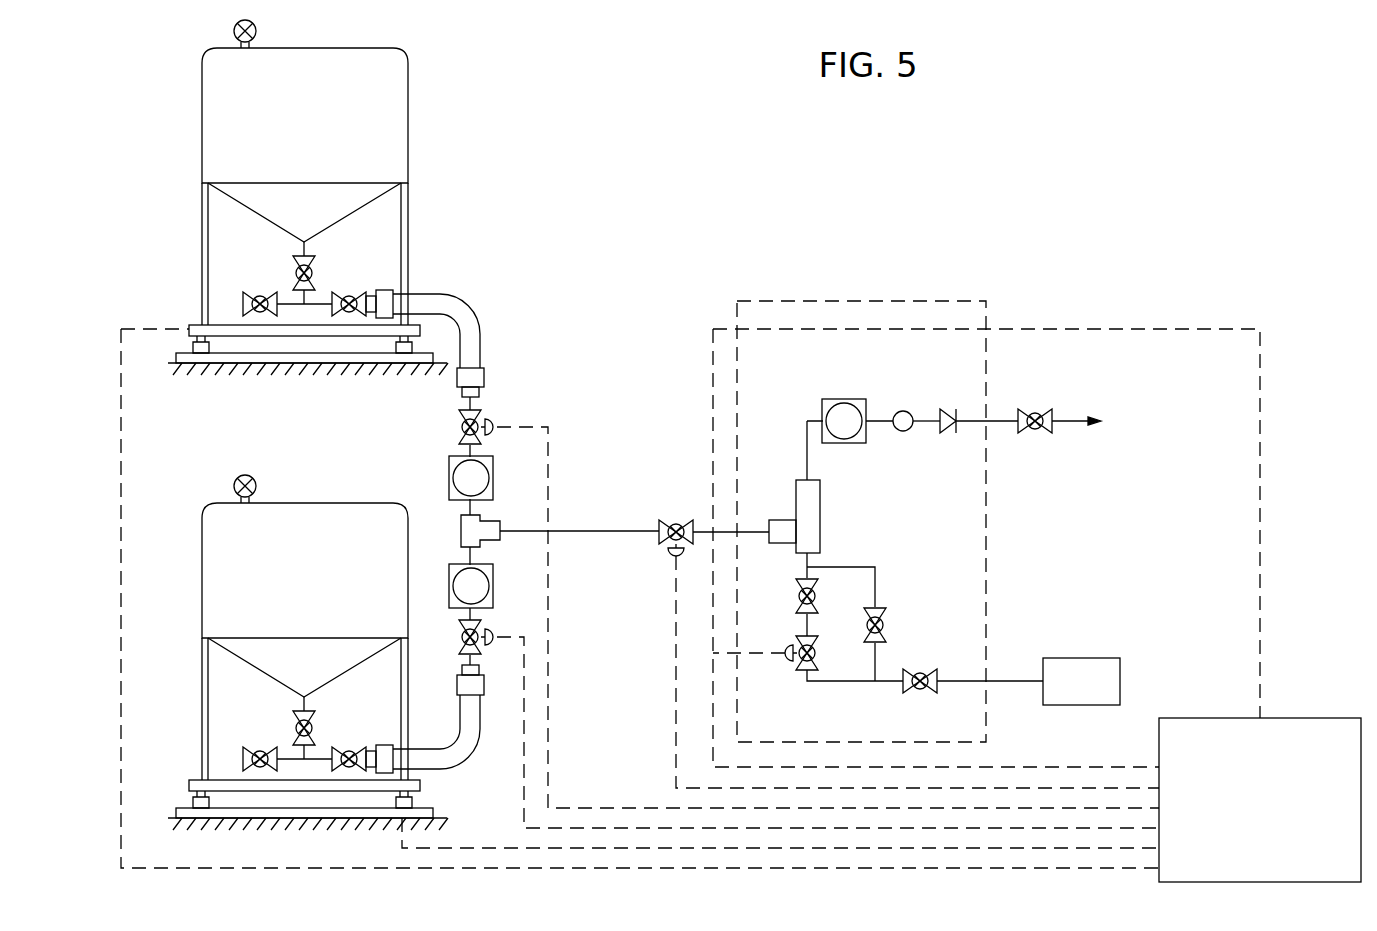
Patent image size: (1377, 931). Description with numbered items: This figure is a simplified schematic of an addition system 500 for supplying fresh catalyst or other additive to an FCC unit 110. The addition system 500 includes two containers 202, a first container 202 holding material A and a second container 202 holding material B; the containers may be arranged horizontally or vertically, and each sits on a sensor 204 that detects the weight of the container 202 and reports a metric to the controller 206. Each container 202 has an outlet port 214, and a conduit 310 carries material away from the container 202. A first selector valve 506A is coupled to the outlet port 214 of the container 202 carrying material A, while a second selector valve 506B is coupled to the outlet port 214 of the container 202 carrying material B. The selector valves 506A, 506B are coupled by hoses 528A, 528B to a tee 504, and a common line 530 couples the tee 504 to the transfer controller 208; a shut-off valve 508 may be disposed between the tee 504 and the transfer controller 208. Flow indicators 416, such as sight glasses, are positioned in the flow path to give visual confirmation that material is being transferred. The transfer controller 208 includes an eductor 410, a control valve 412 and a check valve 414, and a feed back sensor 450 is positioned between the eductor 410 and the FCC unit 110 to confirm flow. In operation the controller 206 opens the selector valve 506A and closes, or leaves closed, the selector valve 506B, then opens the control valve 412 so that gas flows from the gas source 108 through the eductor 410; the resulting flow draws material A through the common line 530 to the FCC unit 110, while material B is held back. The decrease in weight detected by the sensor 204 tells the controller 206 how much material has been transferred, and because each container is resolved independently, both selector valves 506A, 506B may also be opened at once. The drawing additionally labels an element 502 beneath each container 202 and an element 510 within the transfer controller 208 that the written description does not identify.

The addition system 500 is at (652, 99).
The container 202 is at (457, 145).
The sensor 204 is at (182, 309).
The outlet port 214 is at (309, 243).
The ground foundation 502 is at (167, 363).
The conduit 310 is at (463, 300).
The first selector valve 506A is at (480, 412).
The second selector valve 506B is at (482, 624).
The hose 528A is at (458, 445).
The hose 528B is at (478, 615).
The flow indicator 416 is at (495, 468).
The tee 504 is at (500, 522).
The shut-off valve 508 is at (676, 520).
The common line 530 is at (645, 535).
The transfer controller 208 is at (920, 300).
The eductor 410 is at (820, 500).
The feed back sensor 450 is at (900, 410).
The check valve 414 is at (948, 406).
The FCC unit 110 is at (1098, 425).
The bypass valve 510 is at (886, 612).
The control valve 412 is at (800, 672).
The gas source 108 is at (1066, 692).
The controller 206 is at (1244, 840).